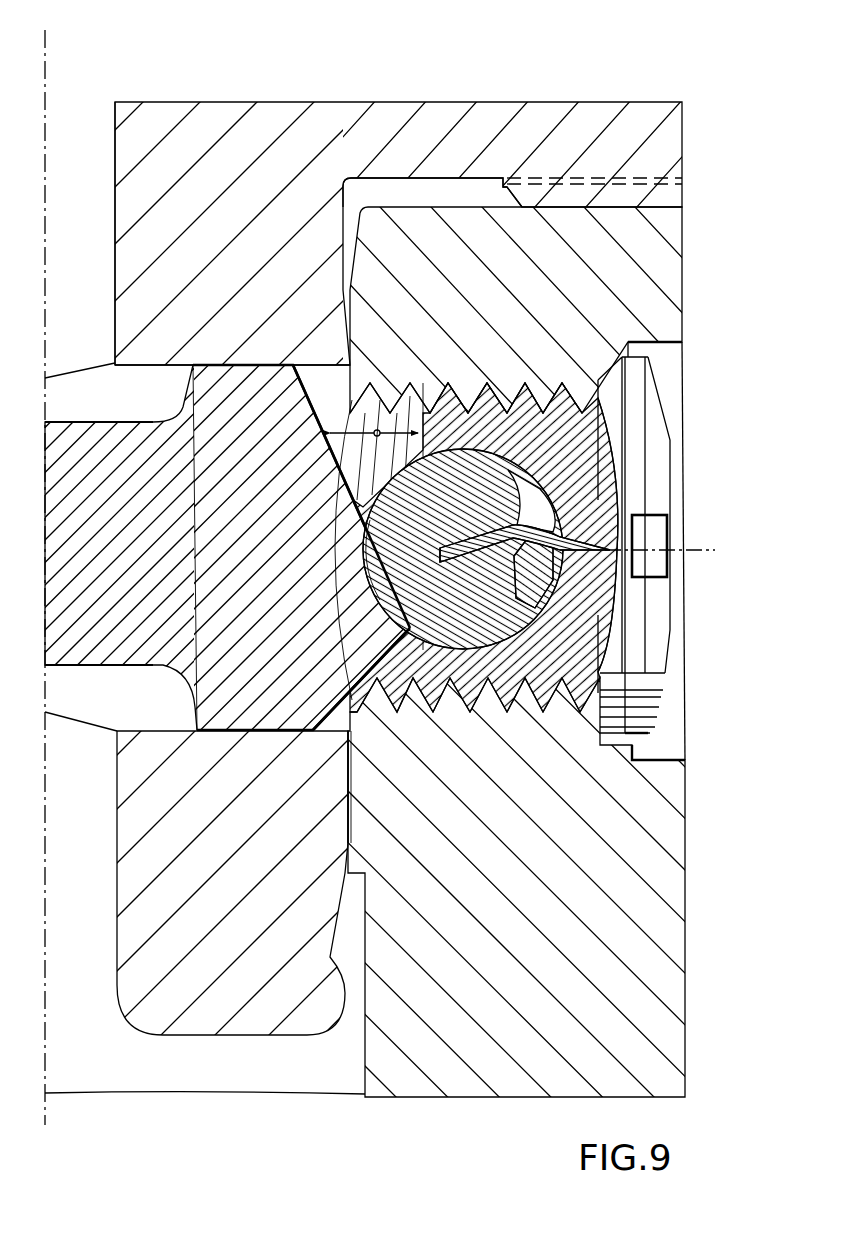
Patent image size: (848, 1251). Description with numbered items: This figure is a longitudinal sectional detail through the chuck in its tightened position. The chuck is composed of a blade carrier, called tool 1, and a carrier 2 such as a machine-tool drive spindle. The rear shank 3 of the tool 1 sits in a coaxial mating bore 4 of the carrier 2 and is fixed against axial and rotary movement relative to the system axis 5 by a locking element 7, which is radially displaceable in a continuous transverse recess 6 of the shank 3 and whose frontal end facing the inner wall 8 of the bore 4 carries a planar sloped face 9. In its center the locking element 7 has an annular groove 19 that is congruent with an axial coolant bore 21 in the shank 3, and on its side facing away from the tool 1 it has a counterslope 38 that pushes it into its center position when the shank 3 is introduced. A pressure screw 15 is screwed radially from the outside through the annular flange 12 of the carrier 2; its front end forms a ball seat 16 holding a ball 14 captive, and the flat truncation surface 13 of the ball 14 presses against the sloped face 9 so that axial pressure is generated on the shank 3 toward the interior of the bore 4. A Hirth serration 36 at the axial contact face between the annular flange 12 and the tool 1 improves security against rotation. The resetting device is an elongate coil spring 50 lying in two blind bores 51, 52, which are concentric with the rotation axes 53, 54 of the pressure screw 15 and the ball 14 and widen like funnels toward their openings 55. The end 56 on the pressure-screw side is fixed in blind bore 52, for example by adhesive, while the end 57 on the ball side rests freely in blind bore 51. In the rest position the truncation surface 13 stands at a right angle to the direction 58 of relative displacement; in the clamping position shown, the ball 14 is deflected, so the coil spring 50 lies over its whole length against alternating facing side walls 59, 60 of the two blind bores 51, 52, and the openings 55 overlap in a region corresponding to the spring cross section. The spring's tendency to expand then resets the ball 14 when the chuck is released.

The tool 1 is at (665, 100).
The carrier 2 is at (690, 990).
The shank 3 is at (228, 1020).
The mating bore 4 is at (354, 823).
The system axis 5 is at (47, 44).
The transverse recess 6 is at (336, 394).
The locking element 7 is at (247, 361).
The inner wall 8 is at (345, 806).
The sloped face 9 is at (322, 410).
The annular flange 12 is at (672, 877).
The truncation surface 13 is at (362, 543).
The ball 14 is at (357, 499).
The pressure screw 15 is at (636, 428).
The ball seat 16 is at (509, 459).
The annular groove 19 is at (131, 419).
The coolant bore 21 is at (112, 131).
The Hirth serration 36 is at (668, 198).
The counterslope 38 is at (335, 716).
The coil spring 50 is at (557, 507).
The blind bore 51 is at (590, 576).
The blind bore 52 is at (522, 508).
The rotation axis 53 is at (686, 548).
The rotation axis 54 is at (386, 600).
The openings 55 is at (580, 500).
The end 56 is at (668, 565).
The end 57 is at (440, 546).
The direction of relative displacement 58 is at (381, 410).
The side wall 59 is at (590, 506).
The side wall 60 is at (527, 547).